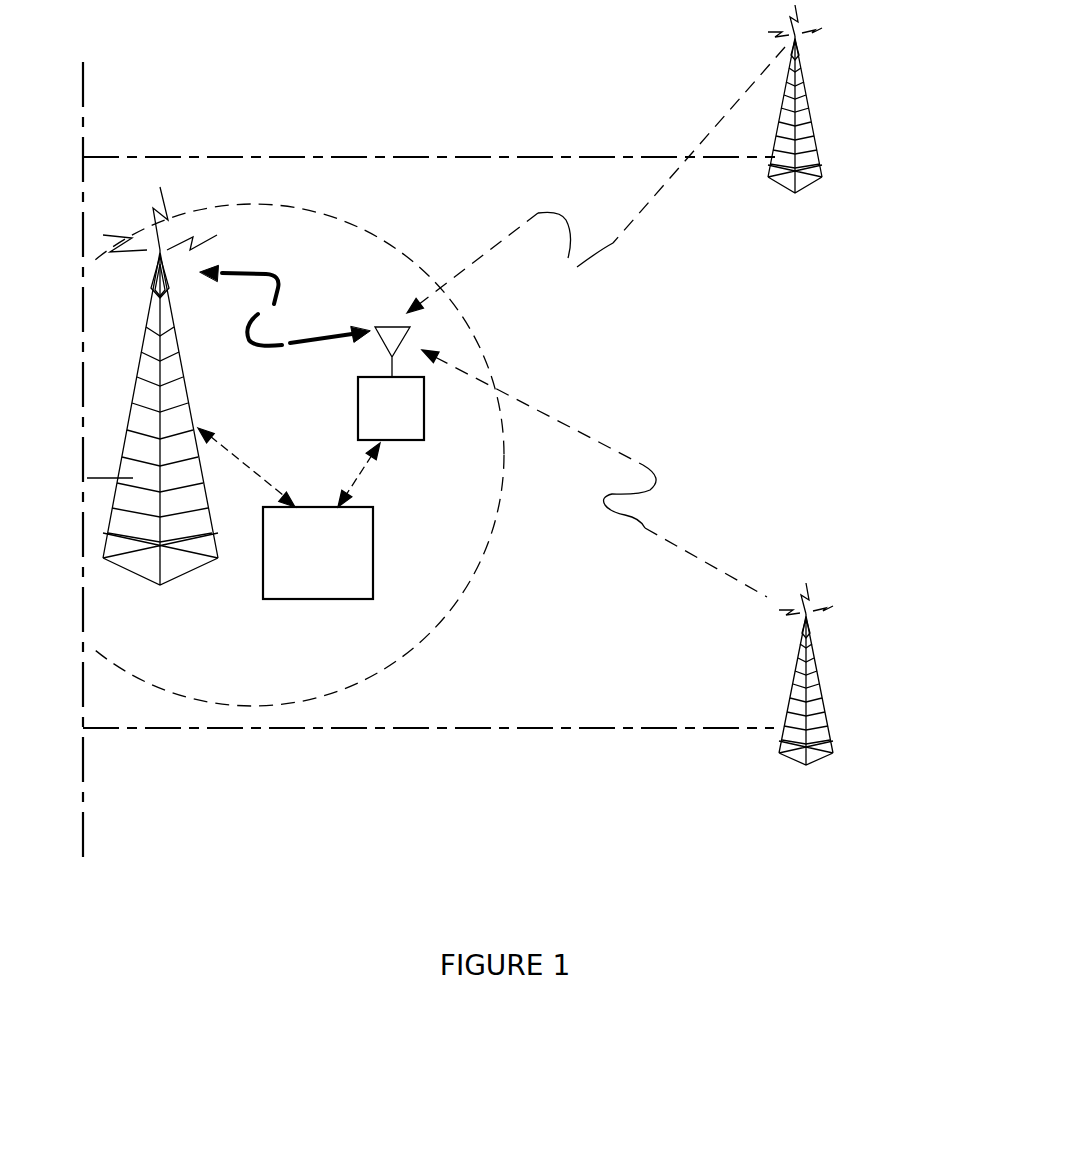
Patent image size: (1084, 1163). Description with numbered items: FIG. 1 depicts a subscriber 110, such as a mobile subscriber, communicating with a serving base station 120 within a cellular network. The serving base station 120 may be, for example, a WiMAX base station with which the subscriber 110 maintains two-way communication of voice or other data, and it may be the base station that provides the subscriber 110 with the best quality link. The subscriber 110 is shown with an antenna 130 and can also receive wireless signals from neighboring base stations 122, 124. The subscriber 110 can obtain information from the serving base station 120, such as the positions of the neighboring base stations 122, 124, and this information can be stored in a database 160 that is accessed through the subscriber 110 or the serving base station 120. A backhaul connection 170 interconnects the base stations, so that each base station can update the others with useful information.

The subscriber 110 is at (407, 430).
The serving base station 120 is at (155, 460).
The neighboring base station 122 is at (795, 137).
The neighboring base station 124 is at (808, 715).
The antenna 130 is at (176, 191).
The database 160 is at (301, 587).
The backhaul connection 170 is at (487, 812).